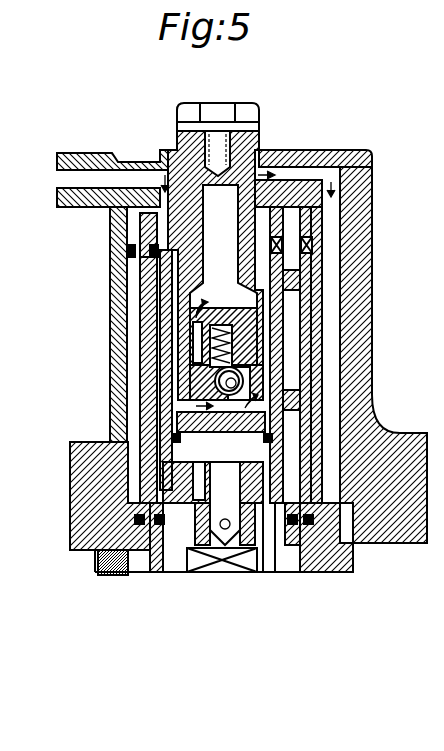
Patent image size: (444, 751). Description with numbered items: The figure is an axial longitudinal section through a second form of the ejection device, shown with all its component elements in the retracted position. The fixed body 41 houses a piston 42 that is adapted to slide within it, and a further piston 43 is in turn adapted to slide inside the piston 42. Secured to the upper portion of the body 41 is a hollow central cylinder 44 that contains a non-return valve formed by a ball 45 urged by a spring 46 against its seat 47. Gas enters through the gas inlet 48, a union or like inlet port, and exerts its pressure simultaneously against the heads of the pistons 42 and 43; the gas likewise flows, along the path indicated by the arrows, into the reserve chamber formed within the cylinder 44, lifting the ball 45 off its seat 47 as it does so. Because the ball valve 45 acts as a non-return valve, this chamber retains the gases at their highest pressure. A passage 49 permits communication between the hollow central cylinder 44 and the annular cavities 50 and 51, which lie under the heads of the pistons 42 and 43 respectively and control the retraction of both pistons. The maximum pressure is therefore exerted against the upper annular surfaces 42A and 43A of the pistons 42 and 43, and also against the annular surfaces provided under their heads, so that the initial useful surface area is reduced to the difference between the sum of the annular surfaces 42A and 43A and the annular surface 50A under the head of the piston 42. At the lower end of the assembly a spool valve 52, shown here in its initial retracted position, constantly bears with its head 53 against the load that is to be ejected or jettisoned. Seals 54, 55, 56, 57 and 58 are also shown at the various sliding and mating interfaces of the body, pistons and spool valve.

The body 41 is at (360, 185).
The piston 42 is at (298, 308).
The upper annular surface of piston 42 42A is at (304, 236).
The piston 43 is at (277, 330).
The upper annular surface of piston 43 43A is at (280, 236).
The hollow central cylinder 44 is at (270, 250).
The ball 45 is at (213, 382).
The spring 46 is at (203, 338).
The seat 47 is at (205, 390).
The gas inlet 48 is at (82, 178).
The passage 49 is at (330, 160).
The annular cavity 50 is at (310, 353).
The annular surface under the head of piston 42 50A is at (292, 272).
The annular cavity 51 is at (290, 398).
The spool valve 52 is at (278, 565).
The head 53 is at (272, 573).
The seal 54 is at (157, 573).
The seal 55 is at (142, 575).
The seal 56 is at (172, 440).
The seal 57 is at (125, 253).
The seal 58 is at (155, 235).